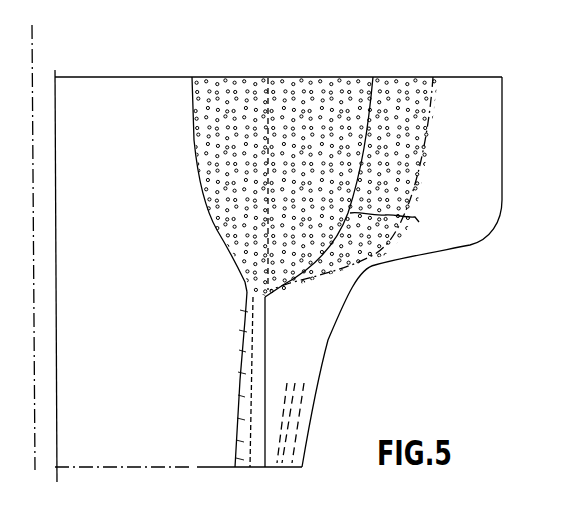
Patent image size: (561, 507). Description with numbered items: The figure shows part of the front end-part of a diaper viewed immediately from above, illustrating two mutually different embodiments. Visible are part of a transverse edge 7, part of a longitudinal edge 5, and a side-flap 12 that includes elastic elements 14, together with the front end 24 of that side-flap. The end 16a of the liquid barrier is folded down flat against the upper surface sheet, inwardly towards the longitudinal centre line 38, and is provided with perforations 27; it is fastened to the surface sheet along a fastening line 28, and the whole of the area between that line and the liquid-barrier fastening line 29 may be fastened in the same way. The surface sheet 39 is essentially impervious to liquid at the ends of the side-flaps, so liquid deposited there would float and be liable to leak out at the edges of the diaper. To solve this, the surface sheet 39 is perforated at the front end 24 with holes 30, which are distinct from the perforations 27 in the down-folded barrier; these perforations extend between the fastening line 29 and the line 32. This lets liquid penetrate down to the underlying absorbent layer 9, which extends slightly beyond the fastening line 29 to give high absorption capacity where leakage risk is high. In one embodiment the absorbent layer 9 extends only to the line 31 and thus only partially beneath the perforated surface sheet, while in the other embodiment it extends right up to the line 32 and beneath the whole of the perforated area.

The longitudinal centre line 38 is at (33, 53).
The transverse edge 7 is at (87, 77).
The absorbent layer 9 is at (112, 97).
The perforations 27 is at (228, 87).
The fastening line 28 is at (192, 113).
The end of the liquid barrier 16a is at (200, 159).
The holes 30 is at (324, 108).
The line 32 is at (430, 128).
The line 31 is at (395, 225).
The second upper liquid-impermeable surface sheet 39 is at (462, 196).
The front end of a side-flap 24 is at (503, 172).
The side-flap 12 is at (296, 345).
The liquid-barrier fastening line 29 is at (265, 315).
The elastic elements 14 is at (316, 421).
The longitudinal edge 5 is at (302, 460).